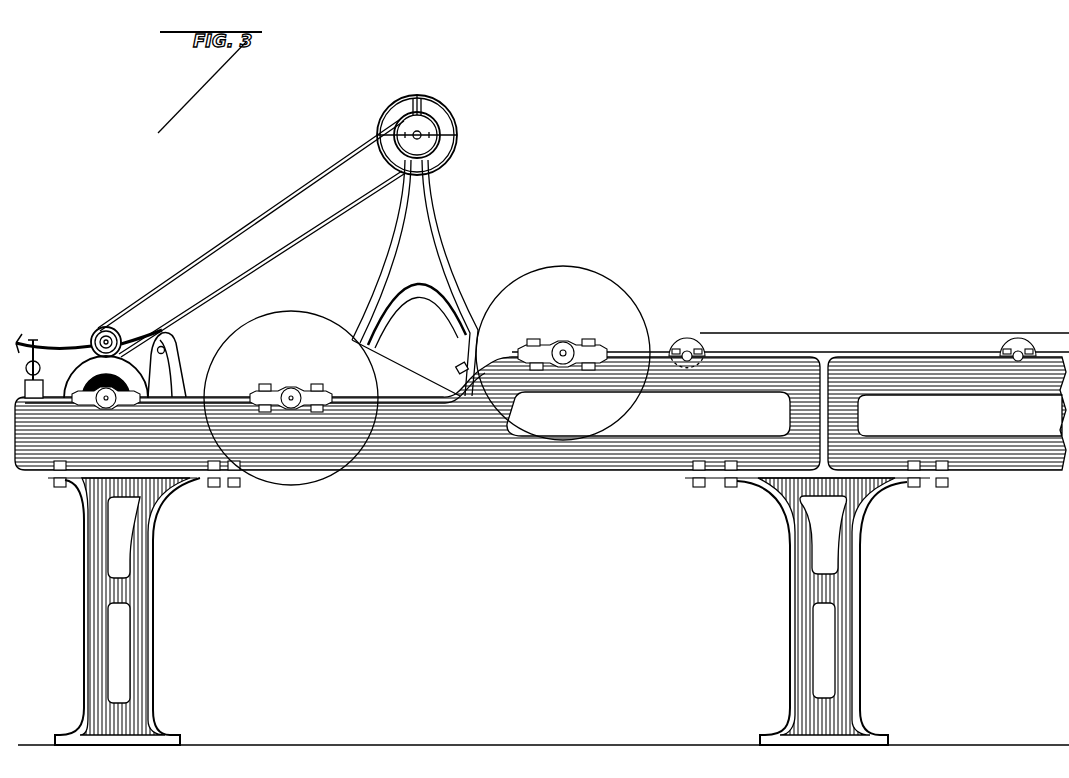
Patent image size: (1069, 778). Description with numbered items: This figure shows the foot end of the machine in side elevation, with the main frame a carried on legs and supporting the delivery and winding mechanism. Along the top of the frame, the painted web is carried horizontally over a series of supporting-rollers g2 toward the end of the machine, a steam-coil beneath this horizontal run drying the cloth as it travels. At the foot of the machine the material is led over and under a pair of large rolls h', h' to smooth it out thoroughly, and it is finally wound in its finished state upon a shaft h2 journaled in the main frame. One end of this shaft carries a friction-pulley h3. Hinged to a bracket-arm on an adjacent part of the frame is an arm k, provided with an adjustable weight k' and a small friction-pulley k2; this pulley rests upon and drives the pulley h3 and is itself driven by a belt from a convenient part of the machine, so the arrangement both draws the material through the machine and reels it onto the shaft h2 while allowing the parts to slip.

The main frame a is at (1017, 420).
The large rolls h' is at (427, 375).
The shaft h2 is at (80, 392).
The friction-pulley h3 is at (125, 386).
The arm k is at (89, 338).
The adjustable weight k' is at (22, 369).
The small friction-pulley k2 is at (105, 332).
The supporting-rollers g2 is at (689, 346).